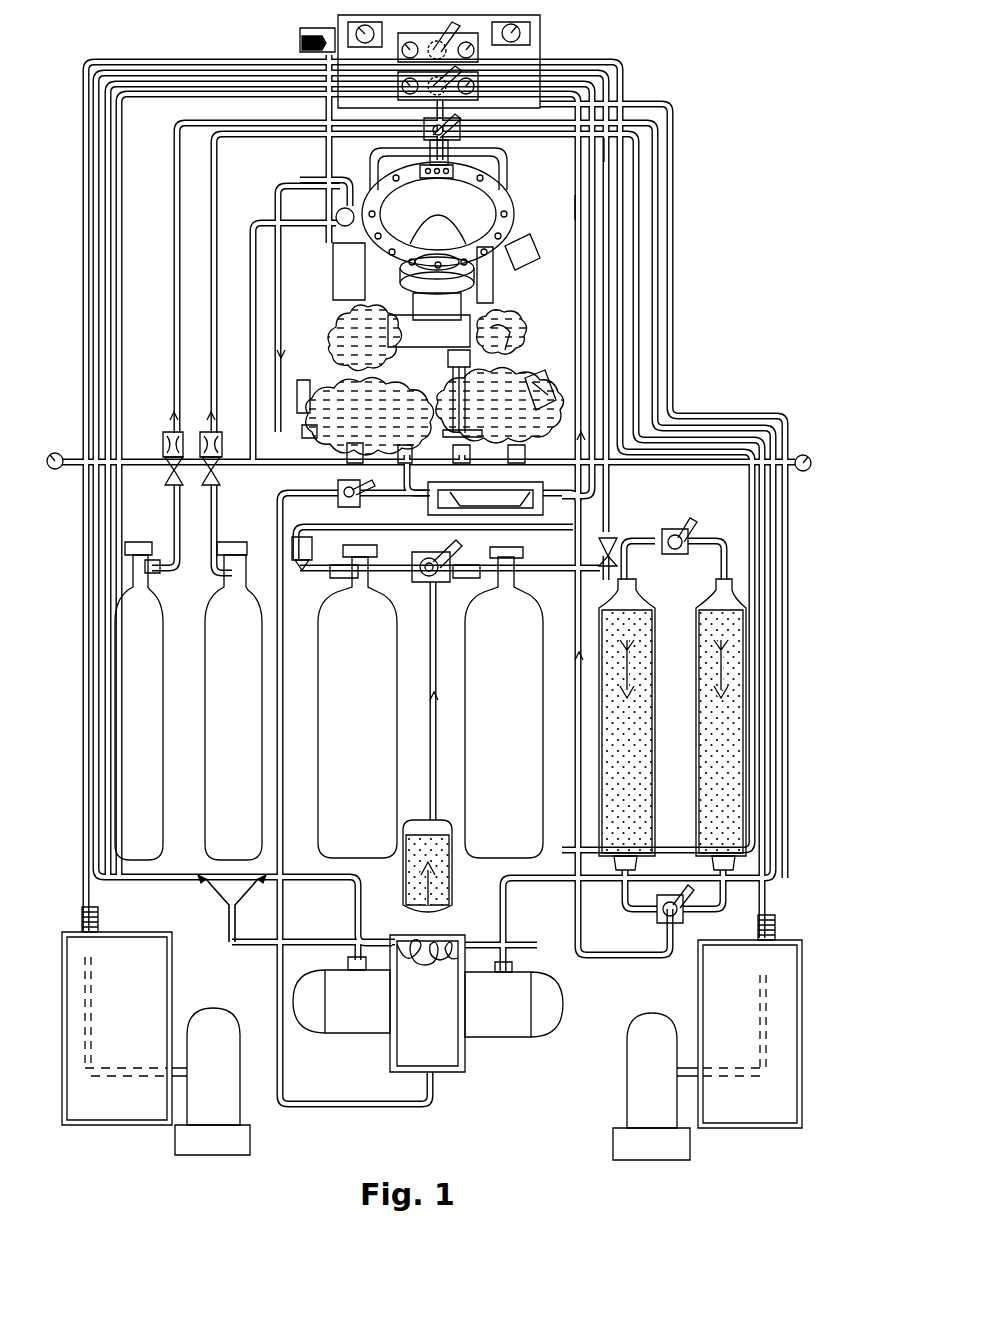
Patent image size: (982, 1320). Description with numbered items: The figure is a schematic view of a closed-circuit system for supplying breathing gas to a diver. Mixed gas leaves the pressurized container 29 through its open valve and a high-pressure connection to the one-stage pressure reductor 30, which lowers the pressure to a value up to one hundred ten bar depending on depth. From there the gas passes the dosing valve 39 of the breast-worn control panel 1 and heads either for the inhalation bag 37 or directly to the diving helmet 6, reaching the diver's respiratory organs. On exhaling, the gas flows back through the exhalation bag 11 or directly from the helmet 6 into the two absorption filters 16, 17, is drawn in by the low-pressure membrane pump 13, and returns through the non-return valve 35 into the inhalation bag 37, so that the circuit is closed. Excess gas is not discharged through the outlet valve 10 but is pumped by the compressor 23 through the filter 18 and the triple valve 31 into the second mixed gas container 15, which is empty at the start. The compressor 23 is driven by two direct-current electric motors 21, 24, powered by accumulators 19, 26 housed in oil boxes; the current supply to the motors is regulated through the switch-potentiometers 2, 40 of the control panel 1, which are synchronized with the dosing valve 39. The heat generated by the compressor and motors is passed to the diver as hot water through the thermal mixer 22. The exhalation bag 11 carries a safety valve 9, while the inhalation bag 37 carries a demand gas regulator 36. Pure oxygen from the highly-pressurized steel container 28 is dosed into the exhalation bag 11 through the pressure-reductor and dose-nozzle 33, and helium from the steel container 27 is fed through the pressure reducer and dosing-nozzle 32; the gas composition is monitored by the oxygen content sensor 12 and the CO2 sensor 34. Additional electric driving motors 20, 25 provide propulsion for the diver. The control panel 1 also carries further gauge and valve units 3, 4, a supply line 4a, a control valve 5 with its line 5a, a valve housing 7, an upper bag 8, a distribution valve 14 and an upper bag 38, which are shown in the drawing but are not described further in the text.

The breast-worn control panel 1 is at (490, 22).
The switch-potentiometer 2 is at (540, 40).
The gauge and valve unit 3 is at (540, 52).
The gauge and valve unit 4 is at (540, 88).
The supply line 4a is at (605, 150).
The control valve 5 is at (450, 130).
The supply line 5a is at (580, 207).
The diving helmet 6 is at (490, 228).
The breathing valve housing 7 is at (470, 322).
The upper breathing bag 8 is at (495, 340).
The safety valve 9 is at (480, 362).
The outlet valve 10 is at (520, 393).
The exhalation bag 11 is at (540, 420).
The oxygen content sensor and meter 12 is at (545, 450).
The low-pressure membrane pump 13 is at (600, 500).
The distribution valve 14 is at (612, 537).
The second mixed gas container 15 is at (599, 600).
The absorption filter 16 is at (731, 622).
The absorption filter 17 is at (630, 732).
The filter 18 is at (597, 848).
The accumulator 19 is at (745, 972).
The electric driving motor 20 is at (667, 1100).
The electric motor 21 is at (518, 1022).
The thermal mixer 22 is at (450, 975).
The compressor 23 is at (445, 1025).
The electric motor 24 is at (360, 1015).
The electric driving motor 25 is at (200, 1085).
The accumulator 26 is at (103, 972).
The steel container 27 is at (125, 785).
The highly-pressurized steel container 28 is at (230, 765).
The pressurized container 29 is at (357, 663).
The one-stage pressure reductor 30 is at (292, 545).
The triple valve 31 is at (52, 454).
The pressure reducer and dosing-nozzle 32 is at (168, 445).
The pressure-reductor and dose-nozzle 33 is at (200, 440).
The CO2 sensor and meter 34 is at (210, 470).
The non-return valve 35 is at (300, 395).
The demand gas regulator 36 is at (370, 395).
The inhalation bag 37 is at (310, 430).
The upper breathing bag 38 is at (345, 350).
The dosing valve 39 is at (300, 42).
The switch-potentiometer 40 is at (345, 27).